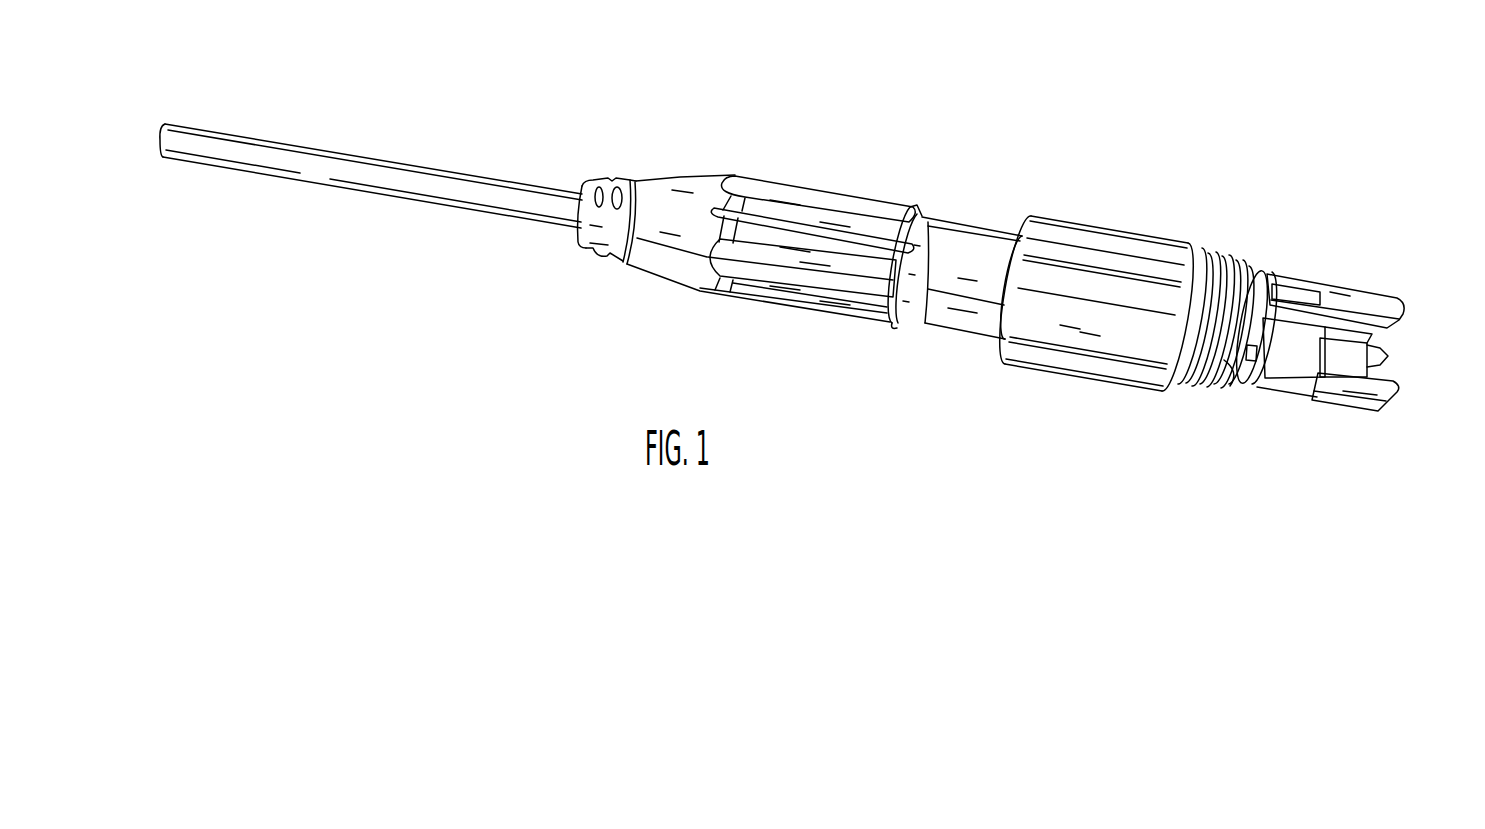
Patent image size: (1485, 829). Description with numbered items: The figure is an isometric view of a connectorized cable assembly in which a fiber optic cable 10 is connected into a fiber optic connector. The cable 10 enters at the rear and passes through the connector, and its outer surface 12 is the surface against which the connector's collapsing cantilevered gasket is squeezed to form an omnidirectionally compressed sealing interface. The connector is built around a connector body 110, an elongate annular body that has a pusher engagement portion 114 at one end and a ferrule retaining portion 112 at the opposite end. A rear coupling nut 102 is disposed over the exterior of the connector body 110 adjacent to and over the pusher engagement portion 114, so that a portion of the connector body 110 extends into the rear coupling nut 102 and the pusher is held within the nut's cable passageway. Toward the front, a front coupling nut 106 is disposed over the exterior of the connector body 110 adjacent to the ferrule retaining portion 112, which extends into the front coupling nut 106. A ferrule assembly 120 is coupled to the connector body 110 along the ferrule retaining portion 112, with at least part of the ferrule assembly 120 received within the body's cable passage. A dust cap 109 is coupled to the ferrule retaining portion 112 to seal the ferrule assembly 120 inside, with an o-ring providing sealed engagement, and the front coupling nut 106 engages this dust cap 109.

The fiber optic cable 10 is at (150, 132).
The outer surface 12 is at (309, 165).
The rear coupling nut 102 is at (683, 263).
The pusher engagement portion 114 is at (779, 150).
The connector body 110 is at (962, 248).
The front coupling nut 106 is at (1068, 333).
The dust cap 109 is at (1233, 357).
The ferrule retaining portion 112 is at (1276, 227).
The ferrule assembly 120 is at (1350, 362).